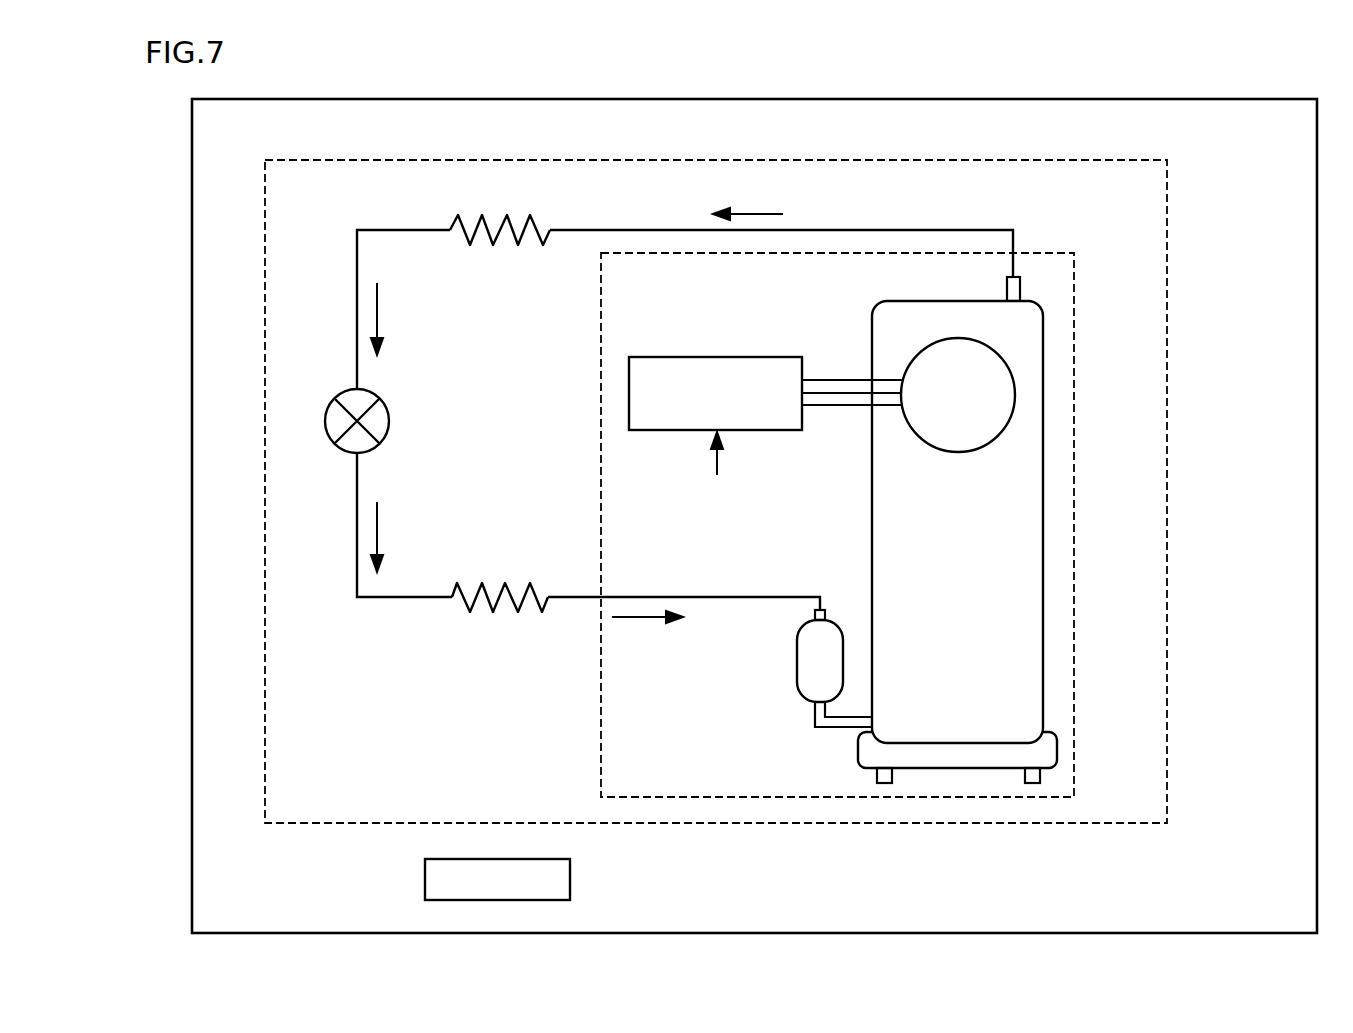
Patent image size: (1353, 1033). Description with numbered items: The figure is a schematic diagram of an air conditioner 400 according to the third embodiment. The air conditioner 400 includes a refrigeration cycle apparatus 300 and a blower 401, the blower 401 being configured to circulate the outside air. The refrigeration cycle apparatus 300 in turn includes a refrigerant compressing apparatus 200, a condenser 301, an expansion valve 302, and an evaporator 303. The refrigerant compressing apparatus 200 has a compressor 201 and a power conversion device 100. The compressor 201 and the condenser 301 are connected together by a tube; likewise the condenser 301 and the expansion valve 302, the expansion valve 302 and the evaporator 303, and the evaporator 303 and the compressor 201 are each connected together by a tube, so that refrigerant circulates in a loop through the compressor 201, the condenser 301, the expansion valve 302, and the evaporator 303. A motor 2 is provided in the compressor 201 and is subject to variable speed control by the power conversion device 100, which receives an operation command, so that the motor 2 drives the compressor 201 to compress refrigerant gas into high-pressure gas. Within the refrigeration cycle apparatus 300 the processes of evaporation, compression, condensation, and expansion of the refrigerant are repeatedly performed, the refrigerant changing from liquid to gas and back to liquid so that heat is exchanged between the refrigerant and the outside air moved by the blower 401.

The air conditioner 400 is at (1258, 99).
The refrigeration cycle apparatus 300 is at (1108, 159).
The refrigerant compressing apparatus 200 is at (1045, 253).
The power conversion device 100 is at (743, 357).
The compressor 201 is at (938, 300).
The motor 2 is at (982, 340).
The condenser 301 is at (495, 223).
The expansion valve 302 is at (367, 391).
The evaporator 303 is at (495, 592).
The blower 401 is at (533, 859).